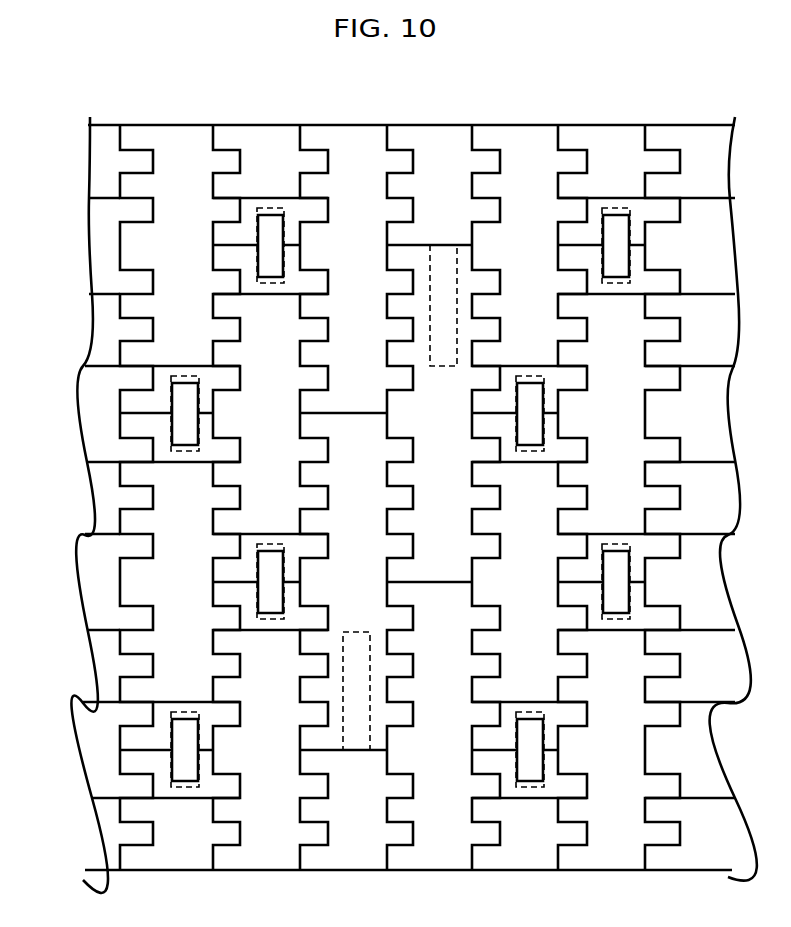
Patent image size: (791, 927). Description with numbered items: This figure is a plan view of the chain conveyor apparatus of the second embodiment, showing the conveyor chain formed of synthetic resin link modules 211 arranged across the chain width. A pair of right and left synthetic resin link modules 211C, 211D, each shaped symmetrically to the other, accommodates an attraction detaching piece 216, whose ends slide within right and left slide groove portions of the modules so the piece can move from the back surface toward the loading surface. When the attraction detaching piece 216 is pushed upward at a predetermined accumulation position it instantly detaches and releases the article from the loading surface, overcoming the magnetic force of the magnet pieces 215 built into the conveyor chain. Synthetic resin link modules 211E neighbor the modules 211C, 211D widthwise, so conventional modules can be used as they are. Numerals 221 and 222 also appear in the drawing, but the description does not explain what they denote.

The synthetic resin link module 211 is at (457, 194).
The synthetic resin link module 211C is at (313, 213).
The synthetic resin link module 211D is at (313, 286).
The synthetic resin link module 211E is at (294, 170).
The magnet piece 215 is at (443, 368).
The attraction detaching piece 216 is at (273, 234).
The first electrode 221 is at (108, 163).
The second electrode 222 is at (102, 230).